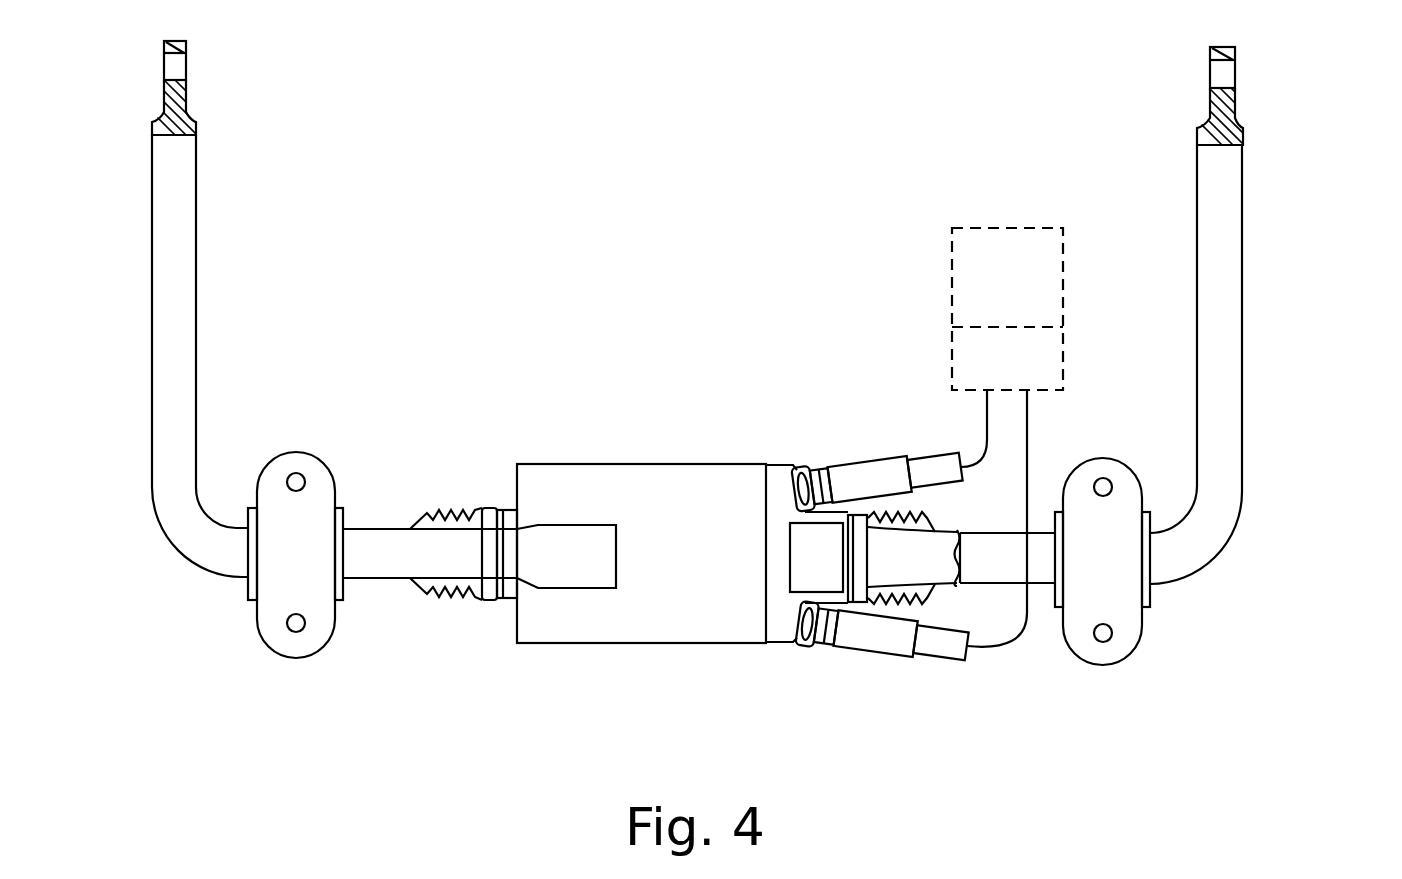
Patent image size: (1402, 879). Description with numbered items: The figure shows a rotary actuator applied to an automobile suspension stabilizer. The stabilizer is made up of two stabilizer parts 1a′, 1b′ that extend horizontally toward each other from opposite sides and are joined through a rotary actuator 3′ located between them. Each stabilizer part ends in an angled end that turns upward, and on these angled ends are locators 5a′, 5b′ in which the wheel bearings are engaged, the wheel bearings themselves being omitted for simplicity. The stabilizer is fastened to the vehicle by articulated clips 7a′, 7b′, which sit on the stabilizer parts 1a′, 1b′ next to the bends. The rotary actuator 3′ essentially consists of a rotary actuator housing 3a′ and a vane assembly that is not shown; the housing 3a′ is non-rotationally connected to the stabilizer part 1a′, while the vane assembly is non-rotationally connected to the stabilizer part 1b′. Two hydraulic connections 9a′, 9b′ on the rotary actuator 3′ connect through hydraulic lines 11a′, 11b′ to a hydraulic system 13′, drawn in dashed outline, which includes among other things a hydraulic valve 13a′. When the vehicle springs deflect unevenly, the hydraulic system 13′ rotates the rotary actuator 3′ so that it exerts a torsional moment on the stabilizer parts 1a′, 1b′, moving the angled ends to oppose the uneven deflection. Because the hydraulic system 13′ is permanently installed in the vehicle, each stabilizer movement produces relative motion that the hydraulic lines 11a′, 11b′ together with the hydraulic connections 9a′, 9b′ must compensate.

The stabilizer part 1a′ is at (1042, 572).
The stabilizer part 1b′ is at (380, 563).
The rotary actuator 3′ is at (578, 645).
The rotary actuator housing 3a′ is at (688, 478).
The locator 5a′ is at (1228, 72).
The locator 5b′ is at (180, 65).
The articulated clip 7a′ is at (1128, 637).
The articulated clip 7b′ is at (267, 627).
The hydraulic connection 9a′ is at (818, 648).
The hydraulic connection 9b′ is at (812, 476).
The hydraulic line 11a′ is at (893, 645).
The hydraulic line 11b′ is at (880, 473).
The hydraulic system 13′ is at (882, 286).
The hydraulic valve 13a′ is at (1038, 350).